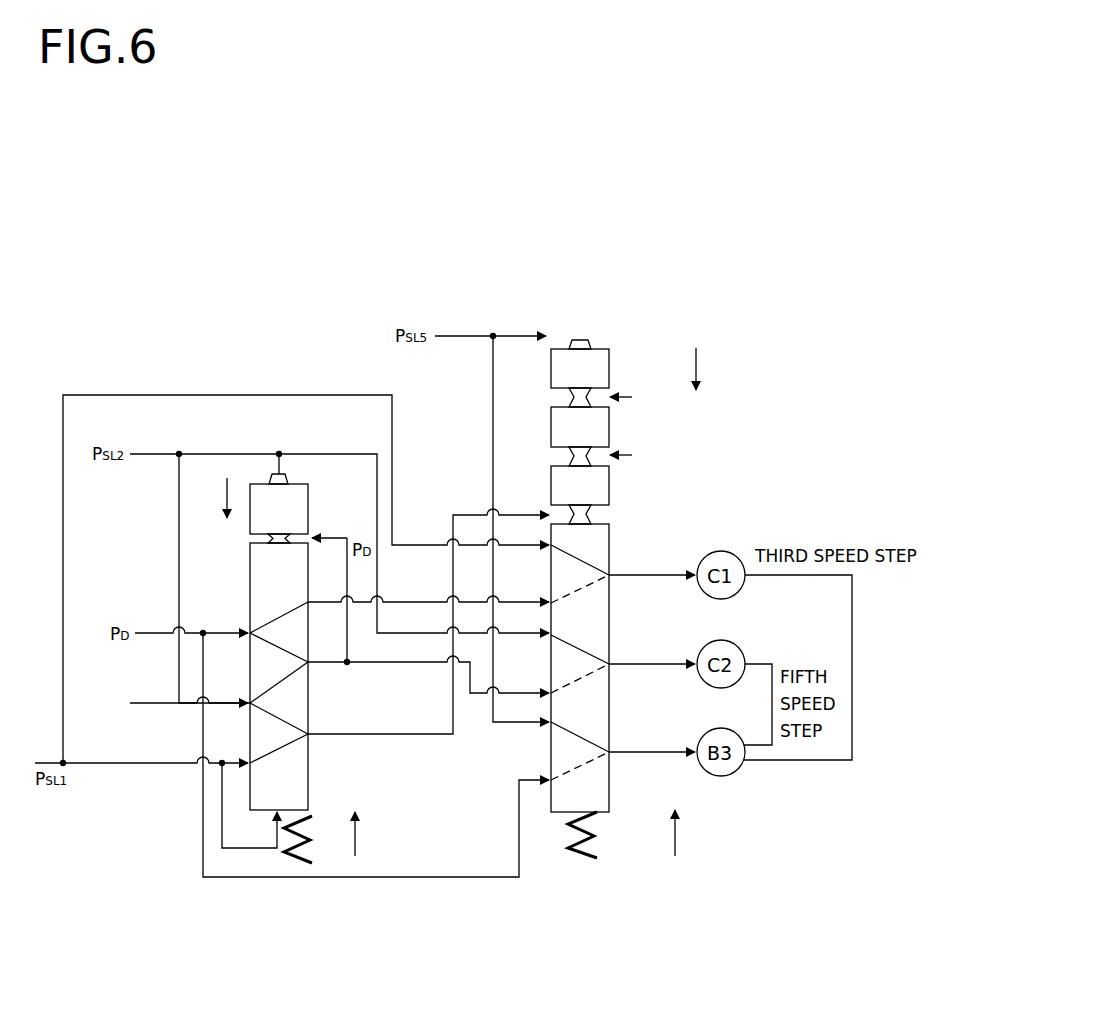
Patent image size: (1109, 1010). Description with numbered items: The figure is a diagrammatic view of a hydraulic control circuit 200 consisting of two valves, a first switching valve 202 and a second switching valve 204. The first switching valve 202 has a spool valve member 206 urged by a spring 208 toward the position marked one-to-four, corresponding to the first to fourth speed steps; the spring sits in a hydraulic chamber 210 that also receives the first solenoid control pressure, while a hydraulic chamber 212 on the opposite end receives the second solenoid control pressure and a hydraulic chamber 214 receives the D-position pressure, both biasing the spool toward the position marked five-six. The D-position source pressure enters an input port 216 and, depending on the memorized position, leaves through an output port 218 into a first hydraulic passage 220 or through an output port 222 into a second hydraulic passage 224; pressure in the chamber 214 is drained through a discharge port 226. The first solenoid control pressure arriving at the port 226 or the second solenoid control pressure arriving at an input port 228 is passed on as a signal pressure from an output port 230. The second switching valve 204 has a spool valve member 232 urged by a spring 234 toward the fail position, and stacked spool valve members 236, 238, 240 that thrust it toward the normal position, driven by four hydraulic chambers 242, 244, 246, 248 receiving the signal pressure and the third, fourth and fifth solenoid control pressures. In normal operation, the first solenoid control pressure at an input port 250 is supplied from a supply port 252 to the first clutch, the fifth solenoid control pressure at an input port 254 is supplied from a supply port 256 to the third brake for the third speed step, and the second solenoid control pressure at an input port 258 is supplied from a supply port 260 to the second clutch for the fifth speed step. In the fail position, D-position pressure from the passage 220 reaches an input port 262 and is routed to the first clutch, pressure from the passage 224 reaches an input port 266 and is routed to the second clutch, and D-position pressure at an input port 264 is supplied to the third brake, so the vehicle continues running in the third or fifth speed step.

The hydraulic control circuit 200 is at (430, 158).
The first switching valve 202 is at (300, 298).
The second switching valve 204 is at (600, 218).
The spool valve member 206 is at (300, 494).
The spring 208 is at (303, 853).
The hydraulic chamber 210 is at (272, 824).
The hydraulic chamber 212 is at (280, 470).
The hydraulic chamber 214 is at (311, 536).
The input port 216 is at (247, 630).
The output port 218 is at (311, 601).
The first hydraulic passage 220 is at (324, 603).
The output port 222 is at (311, 661).
The second hydraulic passage 224 is at (392, 666).
The discharge port 226 is at (244, 688).
The input port 228 is at (247, 706).
The output port 230 is at (311, 733).
The spool valve member 232 is at (592, 518).
The spring 234 is at (598, 840).
The spool valve member 236 is at (600, 483).
The spool valve member 238 is at (600, 421).
The spool valve member 240 is at (598, 356).
The hydraulic chamber 242 is at (551, 512).
The hydraulic chamber 244 is at (608, 452).
The hydraulic chamber 246 is at (607, 393).
The hydraulic chamber 248 is at (546, 336).
The input port 250 is at (551, 548).
The supply port 252 is at (612, 578).
The input port 254 is at (551, 724).
The supply port 256 is at (612, 755).
The input port 258 is at (551, 637).
The supply port 260 is at (612, 667).
The input port 262 is at (551, 603).
The input port 264 is at (551, 780).
The input port 266 is at (551, 692).